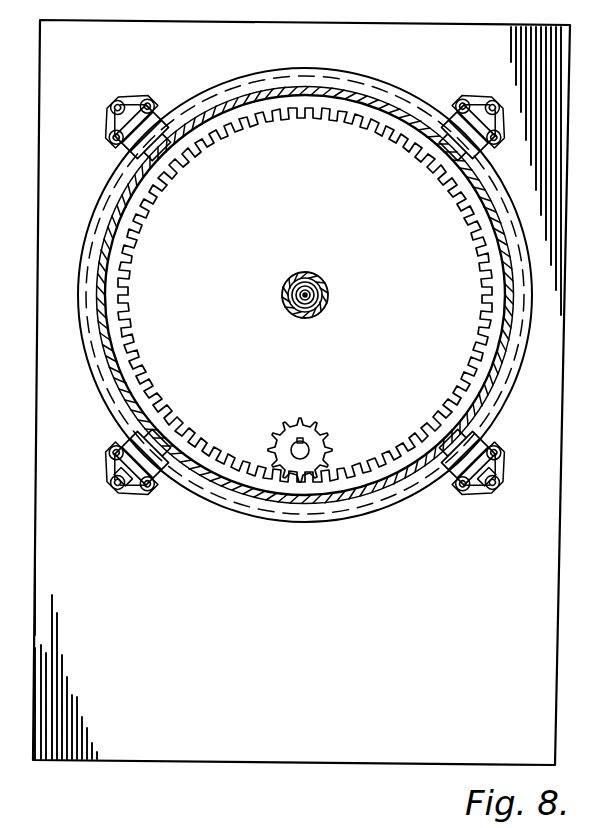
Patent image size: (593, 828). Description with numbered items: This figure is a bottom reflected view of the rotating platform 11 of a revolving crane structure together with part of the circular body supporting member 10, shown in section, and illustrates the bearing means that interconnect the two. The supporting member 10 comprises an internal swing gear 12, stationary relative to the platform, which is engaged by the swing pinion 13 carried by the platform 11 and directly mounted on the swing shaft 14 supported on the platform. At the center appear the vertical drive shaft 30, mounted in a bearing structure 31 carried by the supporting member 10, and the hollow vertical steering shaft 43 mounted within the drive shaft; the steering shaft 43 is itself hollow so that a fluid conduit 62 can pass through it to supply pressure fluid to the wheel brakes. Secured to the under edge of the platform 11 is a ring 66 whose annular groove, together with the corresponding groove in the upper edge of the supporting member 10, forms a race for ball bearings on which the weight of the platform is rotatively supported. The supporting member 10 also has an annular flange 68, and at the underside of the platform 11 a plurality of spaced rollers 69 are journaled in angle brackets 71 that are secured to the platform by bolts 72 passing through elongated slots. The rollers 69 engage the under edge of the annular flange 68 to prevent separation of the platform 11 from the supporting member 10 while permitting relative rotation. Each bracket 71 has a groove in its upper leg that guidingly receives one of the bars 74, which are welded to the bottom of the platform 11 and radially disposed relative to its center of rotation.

The body supporting member 10 is at (380, 90).
The rotating platform 11 is at (34, 548).
The internal swing gear 12 is at (286, 118).
The swing pinion 13 is at (319, 432).
The swing shaft 14 is at (310, 450).
The vertical drive shaft 30 is at (312, 294).
The bearing structure 31 is at (320, 284).
The vertical steering shaft 43 is at (318, 307).
The fluid conduit 62 is at (295, 310).
The ring 66 is at (517, 371).
The annular flange 68 is at (303, 67).
The rollers 69 is at (174, 108).
The angle brackets 71 is at (150, 497).
The bolts 72 is at (112, 122).
The bars 74 is at (120, 100).